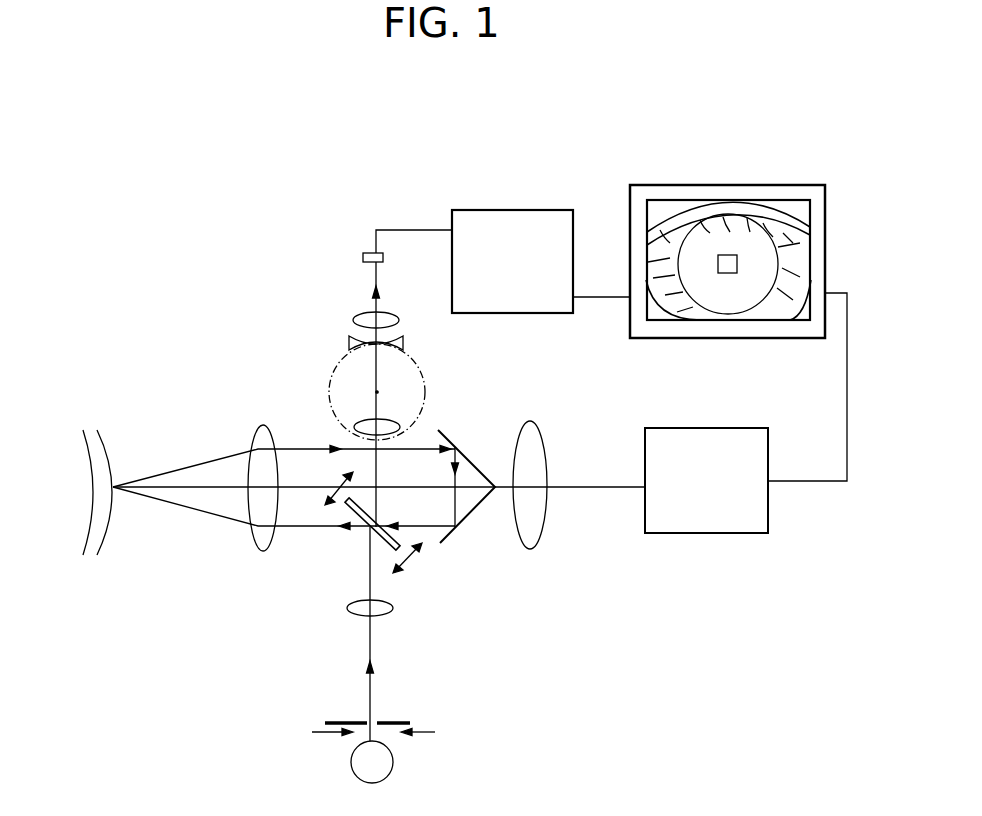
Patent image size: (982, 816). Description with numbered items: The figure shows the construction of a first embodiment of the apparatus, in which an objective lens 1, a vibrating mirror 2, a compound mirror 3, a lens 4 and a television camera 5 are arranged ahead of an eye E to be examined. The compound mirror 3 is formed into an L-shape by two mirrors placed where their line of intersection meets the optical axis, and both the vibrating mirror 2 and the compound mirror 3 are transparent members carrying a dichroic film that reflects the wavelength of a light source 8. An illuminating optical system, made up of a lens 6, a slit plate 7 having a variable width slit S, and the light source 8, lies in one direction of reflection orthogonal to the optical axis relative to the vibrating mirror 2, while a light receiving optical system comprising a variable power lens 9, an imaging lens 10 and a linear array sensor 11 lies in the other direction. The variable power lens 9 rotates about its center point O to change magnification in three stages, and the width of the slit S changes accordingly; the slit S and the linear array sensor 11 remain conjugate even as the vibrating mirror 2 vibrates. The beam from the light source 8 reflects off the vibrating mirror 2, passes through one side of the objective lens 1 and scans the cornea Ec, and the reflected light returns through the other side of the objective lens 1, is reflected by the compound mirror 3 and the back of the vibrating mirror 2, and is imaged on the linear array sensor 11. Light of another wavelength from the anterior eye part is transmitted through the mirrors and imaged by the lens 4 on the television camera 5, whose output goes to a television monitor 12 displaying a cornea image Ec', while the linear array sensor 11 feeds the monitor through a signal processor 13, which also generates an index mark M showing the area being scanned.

The objective lens 1 is at (273, 550).
The vibrating mirror 2 is at (383, 543).
The compound mirror 3 is at (450, 435).
The lens 4 is at (540, 432).
The television camera 5 is at (748, 428).
The lens 6 is at (347, 608).
The slit plate 7 is at (413, 722).
The light source 8 is at (393, 763).
The variable power lens 9 is at (328, 392).
The imaging lens 10 is at (352, 322).
The linear array sensor 11 is at (362, 258).
The television monitor 12 is at (743, 183).
The signal processor 13 is at (525, 208).
The eye to be examined E is at (83, 465).
The cornea Ec is at (119, 538).
The center point O is at (377, 392).
The index mark M is at (737, 263).
The cornea image Ec' is at (856, 282).
The slit S is at (375, 717).